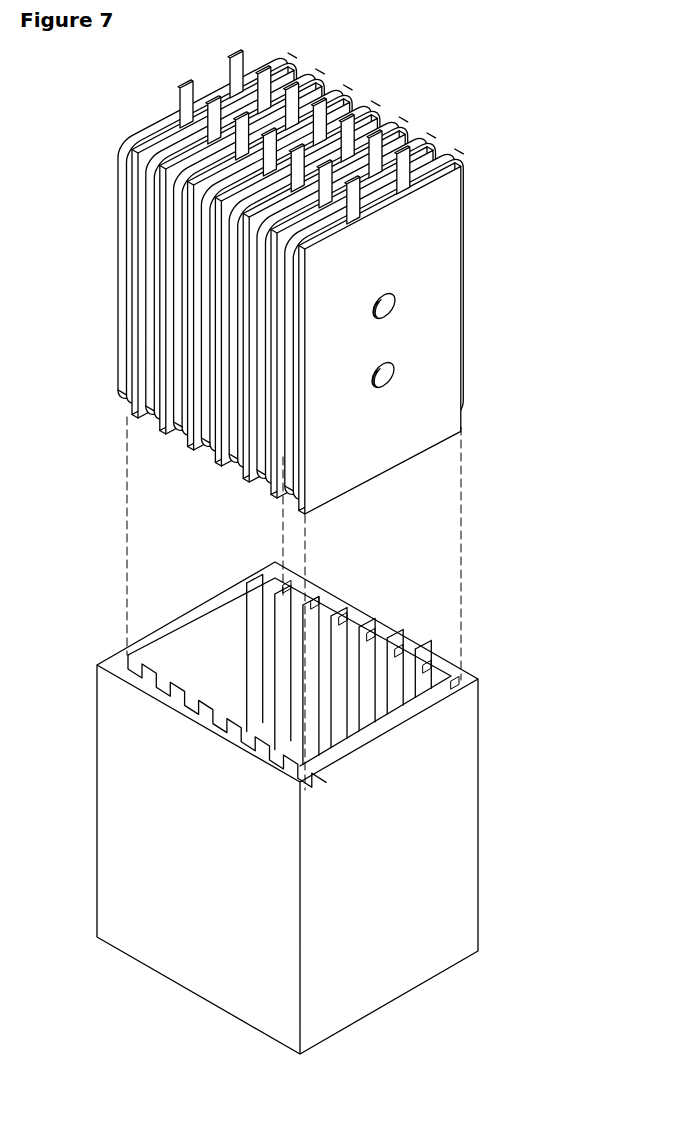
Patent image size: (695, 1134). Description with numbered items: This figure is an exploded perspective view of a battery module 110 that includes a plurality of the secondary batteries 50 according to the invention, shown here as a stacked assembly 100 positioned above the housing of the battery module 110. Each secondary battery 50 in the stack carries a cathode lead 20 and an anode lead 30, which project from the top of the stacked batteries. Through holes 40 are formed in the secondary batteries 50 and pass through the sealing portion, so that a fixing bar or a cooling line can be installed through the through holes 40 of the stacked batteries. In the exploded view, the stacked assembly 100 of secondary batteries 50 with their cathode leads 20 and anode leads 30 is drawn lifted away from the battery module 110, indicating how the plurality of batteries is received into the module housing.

The battery module 100 is at (333, 282).
The cathode lead 20 is at (380, 223).
The anode lead 30 is at (407, 142).
The through hole 40 is at (393, 305).
The secondary battery 50 is at (455, 330).
The battery module 110 is at (120, 852).